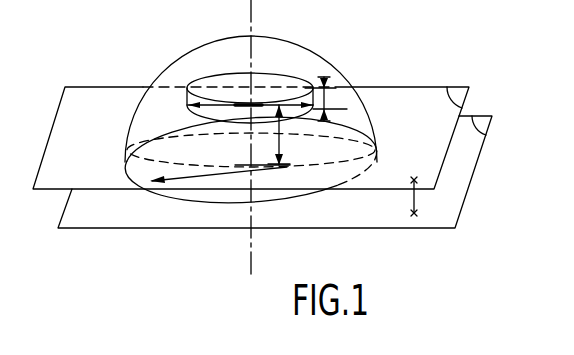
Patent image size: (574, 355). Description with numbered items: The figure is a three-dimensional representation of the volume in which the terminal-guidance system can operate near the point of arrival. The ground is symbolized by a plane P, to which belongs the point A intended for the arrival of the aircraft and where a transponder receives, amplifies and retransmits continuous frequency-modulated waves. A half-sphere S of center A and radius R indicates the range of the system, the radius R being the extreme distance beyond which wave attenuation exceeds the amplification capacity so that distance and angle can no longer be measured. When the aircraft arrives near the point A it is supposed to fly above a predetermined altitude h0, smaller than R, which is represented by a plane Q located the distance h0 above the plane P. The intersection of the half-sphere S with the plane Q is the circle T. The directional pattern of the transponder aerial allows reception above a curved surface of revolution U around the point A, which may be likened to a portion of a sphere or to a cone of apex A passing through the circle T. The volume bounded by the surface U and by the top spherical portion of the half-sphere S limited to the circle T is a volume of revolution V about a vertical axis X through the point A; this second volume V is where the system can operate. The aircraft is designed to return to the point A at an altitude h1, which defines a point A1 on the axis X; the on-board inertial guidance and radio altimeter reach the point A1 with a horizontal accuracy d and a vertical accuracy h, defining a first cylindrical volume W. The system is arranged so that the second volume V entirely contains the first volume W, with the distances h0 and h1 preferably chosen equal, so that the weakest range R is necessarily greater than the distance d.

The half-sphere S is at (321, 62).
The vertical axis X is at (248, 241).
The plane Q is at (251, 138).
The plane P is at (275, 172).
The predetermined altitude h0 is at (427, 200).
The volume of revolution V is at (346, 128).
The curved surface of revolution U is at (360, 150).
The first cylindrical volume W is at (291, 87).
The circle T is at (215, 102).
The horizontal accuracy d is at (250, 93).
The point on axis X A1 is at (258, 100).
The vertical accuracy h is at (326, 99).
The altitude of point A1 h1 is at (356, 134).
The point of arrival A is at (253, 168).
The radius of half-sphere R is at (197, 177).